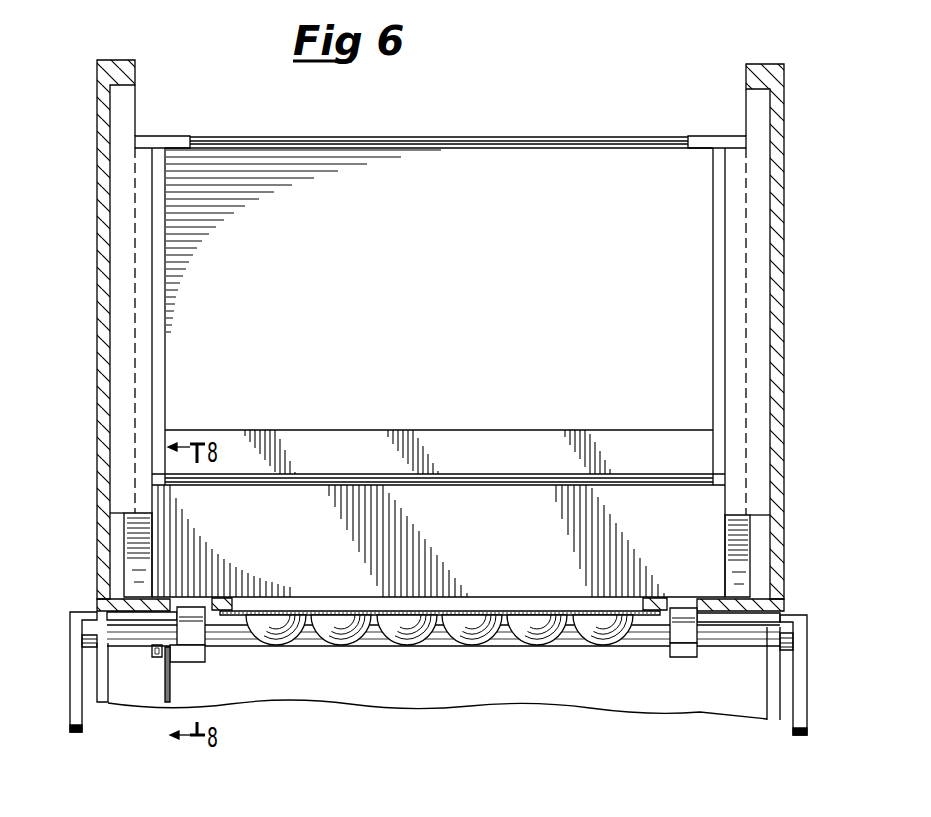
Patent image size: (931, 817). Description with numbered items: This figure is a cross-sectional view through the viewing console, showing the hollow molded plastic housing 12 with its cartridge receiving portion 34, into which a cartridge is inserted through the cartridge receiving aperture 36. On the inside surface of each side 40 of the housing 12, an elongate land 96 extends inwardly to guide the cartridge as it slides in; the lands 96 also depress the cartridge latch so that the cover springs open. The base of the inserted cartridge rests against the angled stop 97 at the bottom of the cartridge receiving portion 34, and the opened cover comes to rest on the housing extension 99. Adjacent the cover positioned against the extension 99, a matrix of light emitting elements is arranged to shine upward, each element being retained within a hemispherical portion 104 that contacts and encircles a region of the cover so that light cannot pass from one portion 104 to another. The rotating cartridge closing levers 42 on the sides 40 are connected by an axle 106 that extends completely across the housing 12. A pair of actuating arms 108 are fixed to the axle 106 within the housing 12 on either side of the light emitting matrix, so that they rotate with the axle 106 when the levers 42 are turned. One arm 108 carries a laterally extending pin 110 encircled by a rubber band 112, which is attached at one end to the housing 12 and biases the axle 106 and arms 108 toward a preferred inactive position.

The housing 12 is at (430, 332).
The cartridge receiving portion 34 is at (97, 245).
The cartridge receiving aperture 36 is at (746, 102).
The sides 40 is at (773, 692).
The rotating cartridge closing lever 42 is at (72, 686).
The land 96 is at (143, 160).
The angled stop 97 is at (125, 543).
The housing extension 99 is at (130, 604).
The hemispherical portion 104 is at (392, 640).
The axle 106 is at (722, 633).
The actuating arm 108 is at (205, 652).
The pin 110 is at (153, 650).
The rubber band 112 is at (166, 682).